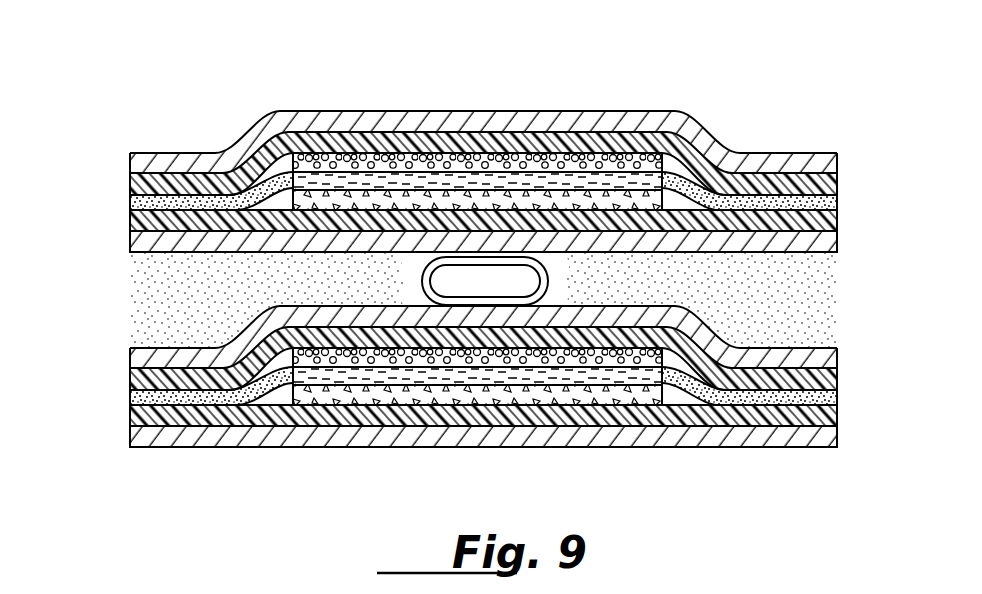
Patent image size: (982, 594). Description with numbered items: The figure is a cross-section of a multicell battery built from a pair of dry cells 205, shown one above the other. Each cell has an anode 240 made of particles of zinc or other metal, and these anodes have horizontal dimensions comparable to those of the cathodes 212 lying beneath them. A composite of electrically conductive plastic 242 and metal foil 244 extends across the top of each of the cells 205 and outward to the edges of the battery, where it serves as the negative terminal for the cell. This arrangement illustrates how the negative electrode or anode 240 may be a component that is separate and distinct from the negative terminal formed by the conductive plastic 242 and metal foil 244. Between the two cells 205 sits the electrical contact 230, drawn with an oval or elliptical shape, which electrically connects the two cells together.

The dry cells 205 is at (112, 153).
The metal foil 244 is at (818, 165).
The electrically conductive plastic 242 is at (813, 187).
The anode 240 is at (505, 163).
The cathode 212 is at (628, 198).
The electrical contact 230 is at (462, 258).